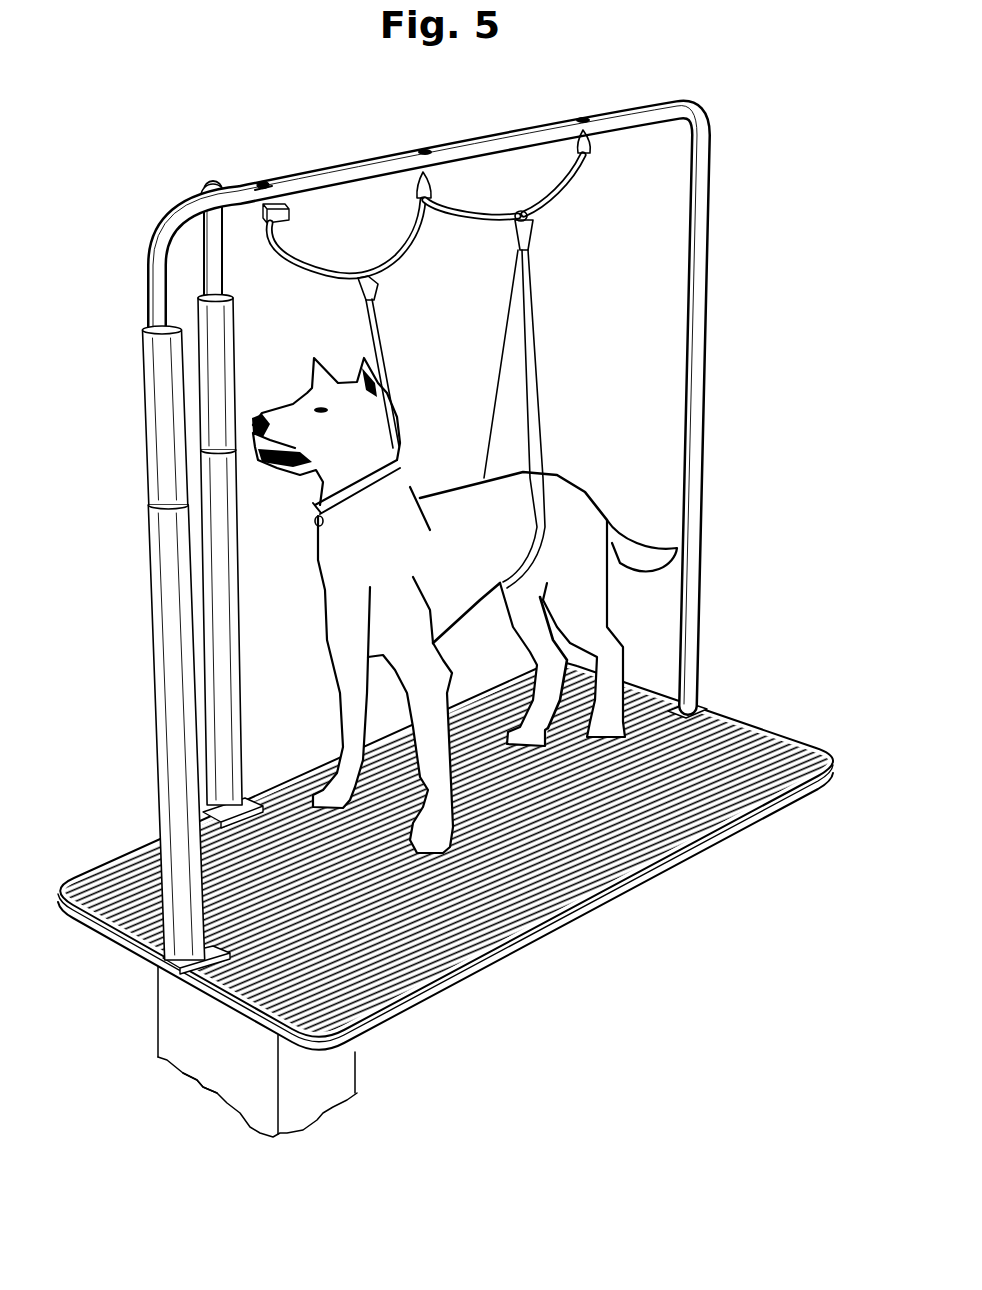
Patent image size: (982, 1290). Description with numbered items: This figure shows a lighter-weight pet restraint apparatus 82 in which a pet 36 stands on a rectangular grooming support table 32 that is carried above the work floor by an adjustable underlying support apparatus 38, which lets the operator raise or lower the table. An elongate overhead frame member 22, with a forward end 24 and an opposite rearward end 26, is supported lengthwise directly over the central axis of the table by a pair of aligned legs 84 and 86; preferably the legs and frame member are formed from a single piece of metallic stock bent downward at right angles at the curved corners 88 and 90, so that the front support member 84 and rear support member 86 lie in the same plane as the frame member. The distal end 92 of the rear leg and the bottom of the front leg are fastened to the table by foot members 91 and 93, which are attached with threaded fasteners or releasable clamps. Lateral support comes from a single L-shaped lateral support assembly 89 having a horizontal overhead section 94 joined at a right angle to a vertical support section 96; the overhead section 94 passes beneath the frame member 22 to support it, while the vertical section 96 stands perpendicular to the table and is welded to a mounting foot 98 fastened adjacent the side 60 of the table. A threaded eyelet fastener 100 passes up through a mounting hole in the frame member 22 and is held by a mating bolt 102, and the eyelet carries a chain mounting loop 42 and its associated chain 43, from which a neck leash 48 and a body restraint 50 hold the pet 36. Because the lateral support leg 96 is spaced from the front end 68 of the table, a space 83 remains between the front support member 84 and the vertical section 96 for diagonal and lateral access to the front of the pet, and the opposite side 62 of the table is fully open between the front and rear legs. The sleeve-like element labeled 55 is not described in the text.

The overhead frame member 22 is at (481, 137).
The forward end 24 is at (200, 197).
The rearward end 26 is at (648, 103).
The grooming support table 32 is at (445, 856).
The pet 36 is at (412, 493).
The adjustable underlying support apparatus 38 is at (342, 1088).
The chain mounting loop 42 is at (254, 243).
The chain 43 is at (400, 263).
The neck leash 48 is at (400, 367).
The body restraint 50 is at (533, 357).
The outer sleeve 55 is at (162, 726).
The side 60 is at (137, 833).
The side 62 is at (568, 950).
The front end 68 is at (197, 1083).
The pet restraint apparatus 82 is at (438, 524).
The space 83 is at (151, 257).
The leg 84 is at (153, 303).
The leg 86 is at (703, 317).
The curved corner 88 is at (176, 228).
The lateral support assembly 89 is at (238, 392).
The curved corner 90 is at (705, 107).
The foot member 91 is at (203, 990).
The distal end 92 is at (695, 692).
The foot member 93 is at (707, 705).
The lateral support overhead section 94 is at (230, 183).
The vertical support section 96 is at (219, 265).
The mounting foot 98 is at (250, 808).
The threaded eyelet fastener 100 is at (270, 223).
The bolt 102 is at (271, 183).